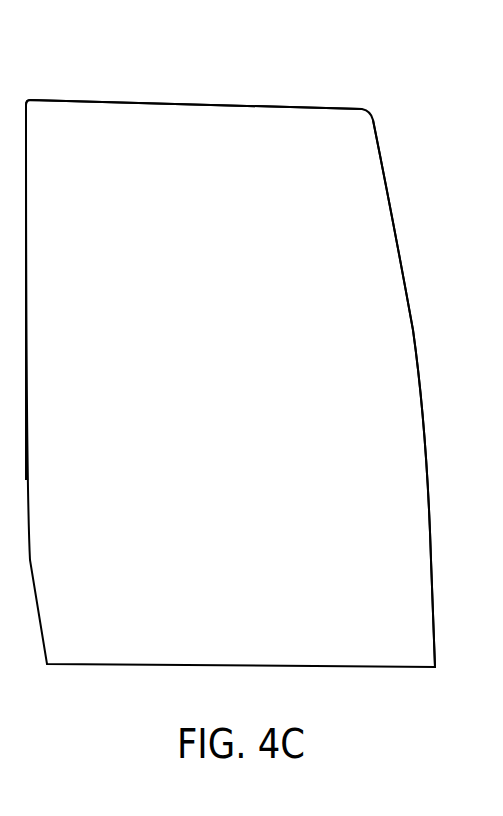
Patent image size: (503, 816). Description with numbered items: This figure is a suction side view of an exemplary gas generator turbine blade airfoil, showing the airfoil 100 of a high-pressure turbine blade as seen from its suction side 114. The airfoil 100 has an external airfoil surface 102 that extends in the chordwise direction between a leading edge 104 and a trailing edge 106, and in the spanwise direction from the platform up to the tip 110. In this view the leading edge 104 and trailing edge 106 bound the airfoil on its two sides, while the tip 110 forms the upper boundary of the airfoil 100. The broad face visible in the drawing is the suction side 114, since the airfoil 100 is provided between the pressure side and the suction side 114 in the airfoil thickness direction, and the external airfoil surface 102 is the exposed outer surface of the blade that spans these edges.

The airfoil 100 is at (369, 95).
The external airfoil surface 102 is at (363, 533).
The leading edge 104 is at (410, 311).
The trailing edge 106 is at (26, 248).
The tip 110 is at (250, 107).
The suction side 114 is at (247, 439).